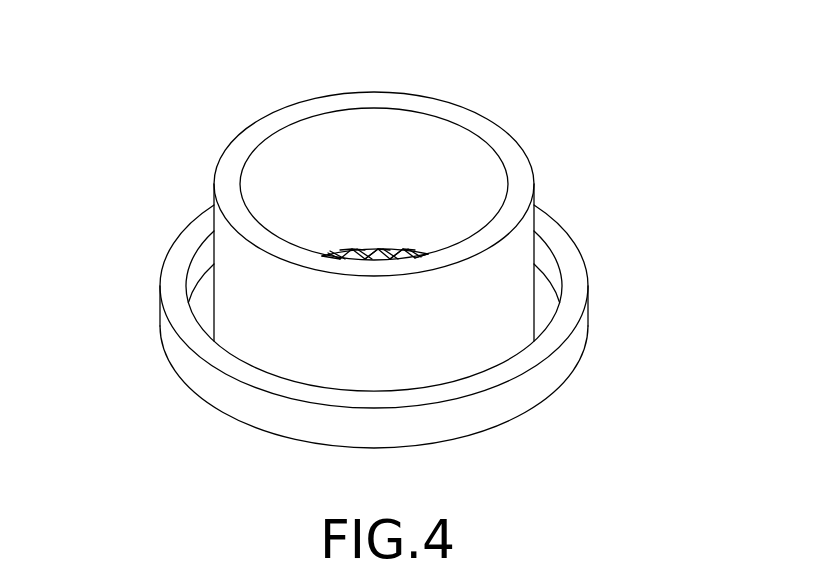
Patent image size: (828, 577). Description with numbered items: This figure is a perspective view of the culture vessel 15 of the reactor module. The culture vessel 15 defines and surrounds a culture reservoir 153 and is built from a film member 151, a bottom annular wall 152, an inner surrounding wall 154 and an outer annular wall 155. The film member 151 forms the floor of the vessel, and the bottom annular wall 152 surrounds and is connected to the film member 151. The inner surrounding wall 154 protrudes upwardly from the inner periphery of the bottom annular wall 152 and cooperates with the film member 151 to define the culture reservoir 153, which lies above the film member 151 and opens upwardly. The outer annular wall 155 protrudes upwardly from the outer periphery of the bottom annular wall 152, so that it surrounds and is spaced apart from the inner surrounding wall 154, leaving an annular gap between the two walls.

The culture vessel 15 is at (385, 242).
The film member 151 is at (354, 254).
The bottom annular wall 152 is at (194, 274).
The culture reservoir 153 is at (384, 118).
The inner surrounding wall 154 is at (482, 128).
The outer annular wall 155 is at (567, 380).